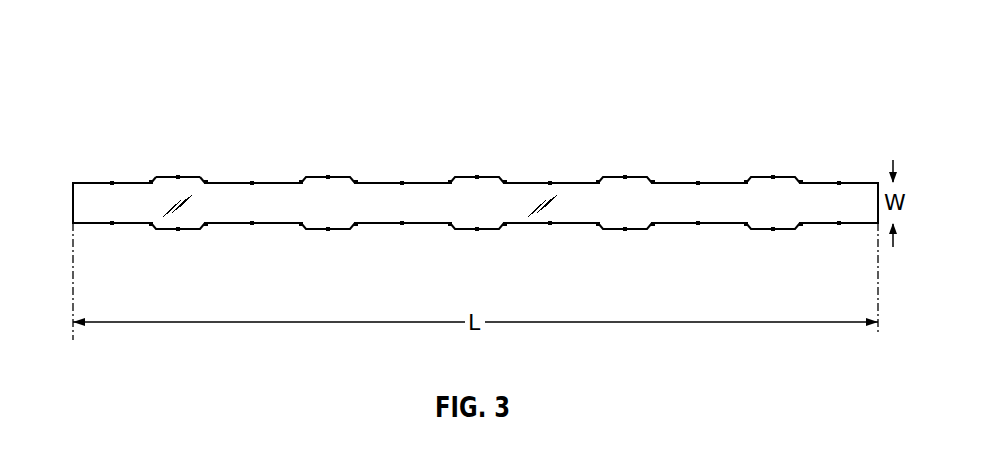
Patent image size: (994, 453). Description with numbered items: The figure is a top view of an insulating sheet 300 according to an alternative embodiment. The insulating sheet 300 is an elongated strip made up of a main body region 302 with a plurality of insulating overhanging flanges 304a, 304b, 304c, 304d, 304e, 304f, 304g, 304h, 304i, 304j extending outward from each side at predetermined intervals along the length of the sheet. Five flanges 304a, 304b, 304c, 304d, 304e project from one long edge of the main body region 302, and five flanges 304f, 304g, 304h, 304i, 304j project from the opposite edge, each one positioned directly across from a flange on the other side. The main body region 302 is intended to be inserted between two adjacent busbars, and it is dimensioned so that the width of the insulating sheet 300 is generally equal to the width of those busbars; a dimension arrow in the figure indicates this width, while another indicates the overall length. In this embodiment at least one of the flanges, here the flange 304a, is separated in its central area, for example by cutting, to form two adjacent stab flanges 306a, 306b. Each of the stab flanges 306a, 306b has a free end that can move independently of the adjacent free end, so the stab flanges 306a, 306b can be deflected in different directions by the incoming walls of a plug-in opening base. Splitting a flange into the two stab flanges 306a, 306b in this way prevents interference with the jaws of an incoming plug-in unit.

The insulating sheet 300 is at (122, 46).
The main body region 302 is at (92, 197).
The insulating overhanging flange 304a is at (179, 177).
The insulating overhanging flange 304b is at (328, 177).
The insulating overhanging flange 304c is at (477, 177).
The insulating overhanging flange 304d is at (625, 177).
The insulating overhanging flange 304e is at (773, 177).
The insulating overhanging flange 304f is at (178, 230).
The insulating overhanging flange 304g is at (329, 230).
The insulating overhanging flange 304h is at (477, 230).
The insulating overhanging flange 304i is at (625, 230).
The insulating overhanging flange 304j is at (773, 230).
The stab flange 306a is at (163, 182).
The stab flange 306b is at (193, 180).